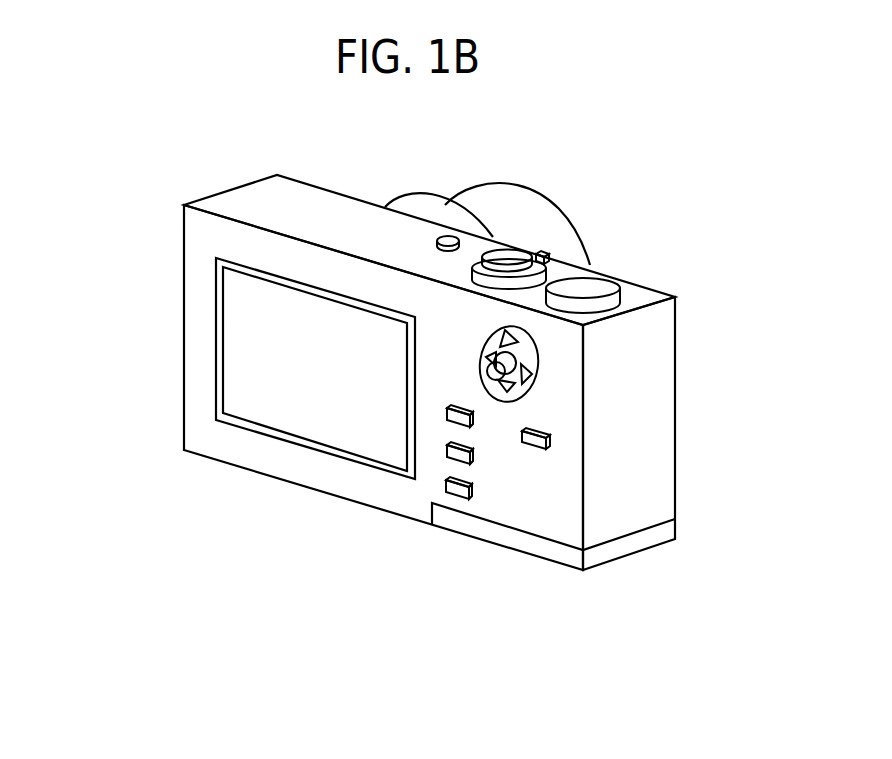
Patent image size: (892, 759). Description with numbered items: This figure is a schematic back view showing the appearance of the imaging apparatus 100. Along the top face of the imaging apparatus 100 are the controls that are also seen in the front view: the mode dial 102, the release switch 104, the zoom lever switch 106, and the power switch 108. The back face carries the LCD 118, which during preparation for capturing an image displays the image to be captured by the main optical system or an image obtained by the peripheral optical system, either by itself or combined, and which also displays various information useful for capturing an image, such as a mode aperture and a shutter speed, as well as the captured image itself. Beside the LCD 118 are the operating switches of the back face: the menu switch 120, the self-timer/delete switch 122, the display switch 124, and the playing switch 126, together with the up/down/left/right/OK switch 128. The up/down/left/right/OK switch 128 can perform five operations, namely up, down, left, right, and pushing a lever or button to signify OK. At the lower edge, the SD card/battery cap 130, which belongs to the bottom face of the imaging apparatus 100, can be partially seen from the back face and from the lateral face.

The imaging apparatus 100 is at (625, 175).
The mode dial 102 is at (596, 287).
The release switch 104 is at (513, 253).
The zoom lever switch 106 is at (540, 257).
The power switch 108 is at (445, 238).
The LCD 118 is at (242, 328).
The menu switch 120 is at (463, 426).
The self-timer/delete switch 122 is at (465, 462).
The display switch 124 is at (458, 499).
The playing switch 126 is at (537, 449).
The up/down/left/right/OK switch 128 is at (510, 365).
The SD card/battery cap 130 is at (632, 555).